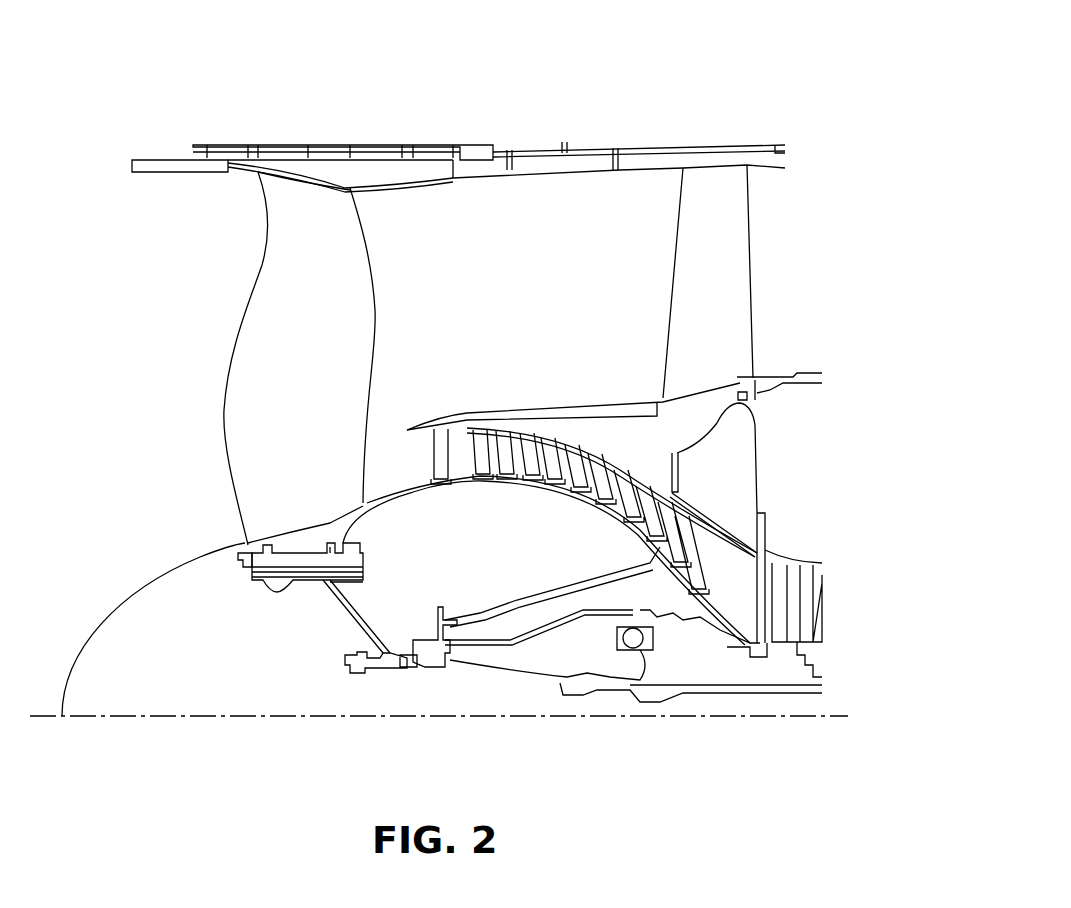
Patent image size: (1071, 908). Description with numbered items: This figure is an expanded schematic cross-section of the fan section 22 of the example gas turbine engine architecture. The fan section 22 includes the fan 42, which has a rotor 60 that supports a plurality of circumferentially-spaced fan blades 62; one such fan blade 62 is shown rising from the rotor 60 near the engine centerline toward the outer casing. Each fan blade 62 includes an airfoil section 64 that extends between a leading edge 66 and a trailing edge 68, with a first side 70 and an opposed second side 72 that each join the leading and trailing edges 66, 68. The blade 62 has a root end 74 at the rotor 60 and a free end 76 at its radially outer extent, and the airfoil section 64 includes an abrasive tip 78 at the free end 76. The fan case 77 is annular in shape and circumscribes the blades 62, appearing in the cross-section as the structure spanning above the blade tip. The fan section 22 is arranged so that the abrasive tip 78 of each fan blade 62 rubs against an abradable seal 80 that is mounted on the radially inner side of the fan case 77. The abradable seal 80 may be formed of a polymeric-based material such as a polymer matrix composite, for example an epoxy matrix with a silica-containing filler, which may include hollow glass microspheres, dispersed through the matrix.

The fan section 22 is at (604, 40).
The fan 42 is at (148, 548).
The rotor 60 is at (294, 608).
The fan blade 62 is at (313, 358).
The airfoil section 64 is at (283, 327).
The leading edge 66 is at (255, 283).
The trailing edge 68 is at (377, 312).
The first side 70 is at (347, 233).
The second side 72 is at (268, 223).
The root end 74 is at (308, 545).
The free end 76 is at (307, 160).
The fan case 77 is at (228, 147).
The abrasive tip 78 is at (337, 188).
The abradable seal 80 is at (323, 173).